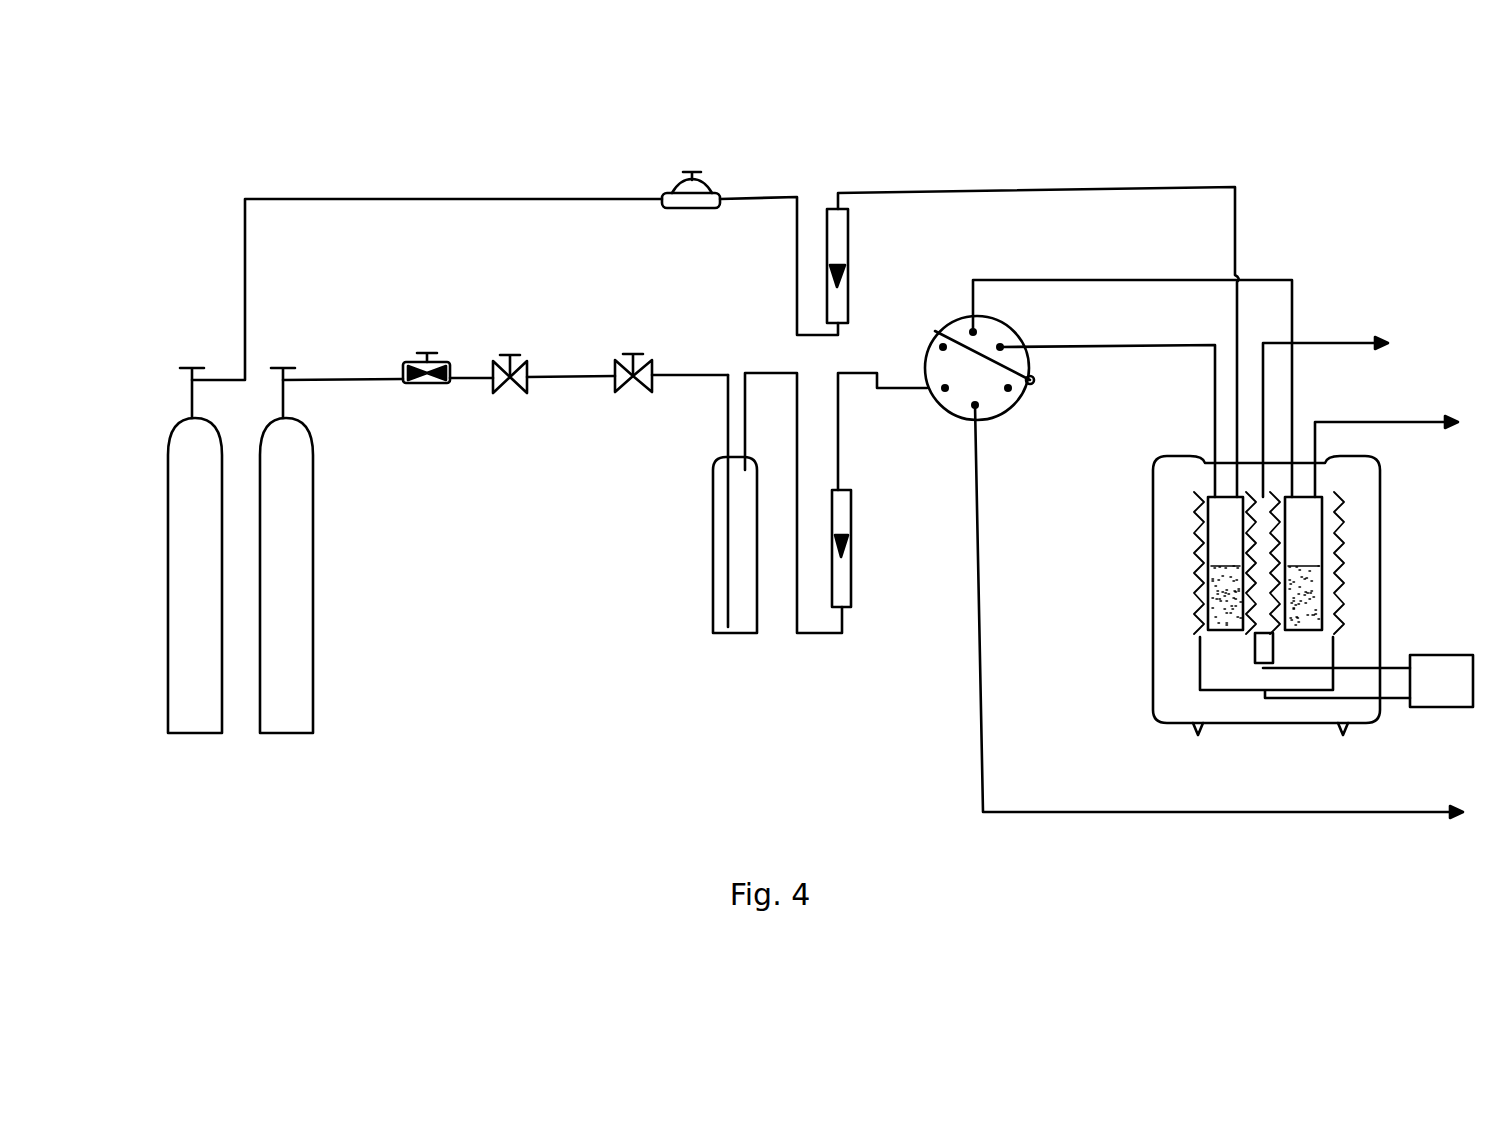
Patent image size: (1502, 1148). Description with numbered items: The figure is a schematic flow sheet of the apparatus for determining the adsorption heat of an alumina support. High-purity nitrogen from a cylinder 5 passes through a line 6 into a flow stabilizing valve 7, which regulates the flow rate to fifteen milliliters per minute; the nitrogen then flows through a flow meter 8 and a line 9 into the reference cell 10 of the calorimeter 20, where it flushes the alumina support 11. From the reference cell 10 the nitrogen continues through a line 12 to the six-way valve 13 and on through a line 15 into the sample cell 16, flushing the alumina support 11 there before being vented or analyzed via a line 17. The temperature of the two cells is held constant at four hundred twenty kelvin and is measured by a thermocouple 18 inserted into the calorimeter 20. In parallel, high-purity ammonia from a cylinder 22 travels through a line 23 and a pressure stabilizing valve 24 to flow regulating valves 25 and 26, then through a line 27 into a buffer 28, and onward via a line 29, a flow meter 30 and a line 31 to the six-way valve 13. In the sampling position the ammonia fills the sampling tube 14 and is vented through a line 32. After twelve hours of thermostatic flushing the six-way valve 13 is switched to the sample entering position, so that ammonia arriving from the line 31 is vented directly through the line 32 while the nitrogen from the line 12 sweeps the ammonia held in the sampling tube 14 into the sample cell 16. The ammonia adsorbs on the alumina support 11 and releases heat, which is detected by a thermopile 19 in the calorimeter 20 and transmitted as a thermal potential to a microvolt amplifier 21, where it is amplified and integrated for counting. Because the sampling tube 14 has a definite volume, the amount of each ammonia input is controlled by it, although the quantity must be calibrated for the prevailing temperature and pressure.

The cylinder 5 is at (195, 550).
The cylinder 22 is at (286, 550).
The line 23 is at (505, 367).
The pressure stabilizing valve 24 is at (426, 353).
The flow regulating valve 25 is at (510, 358).
The flow regulating valve 26 is at (633, 358).
The line 6 is at (515, 275).
The flow stabilizing valve 7 is at (698, 182).
The flow meter 8 is at (852, 266).
The line 9 is at (1038, 329).
The line 27 is at (709, 501).
The buffer 28 is at (704, 545).
The line 29 is at (793, 486).
The flow meter 30 is at (870, 548).
The line 31 is at (882, 431).
The sampling tube 14 is at (977, 368).
The six-way valve 13 is at (1044, 406).
The line 15 is at (1132, 371).
The line 12 is at (1107, 421).
The thermocouple 18 is at (1325, 400).
The line 17 is at (1386, 440).
The thermopile 19 is at (1340, 503).
The calorimeter 20 is at (1357, 560).
The alumina support 11 is at (1320, 612).
The reference cell 10 is at (1225, 563).
The sample cell 16 is at (1303, 563).
The microvolt amplifier 21 is at (1364, 670).
The line 32 is at (1219, 611).